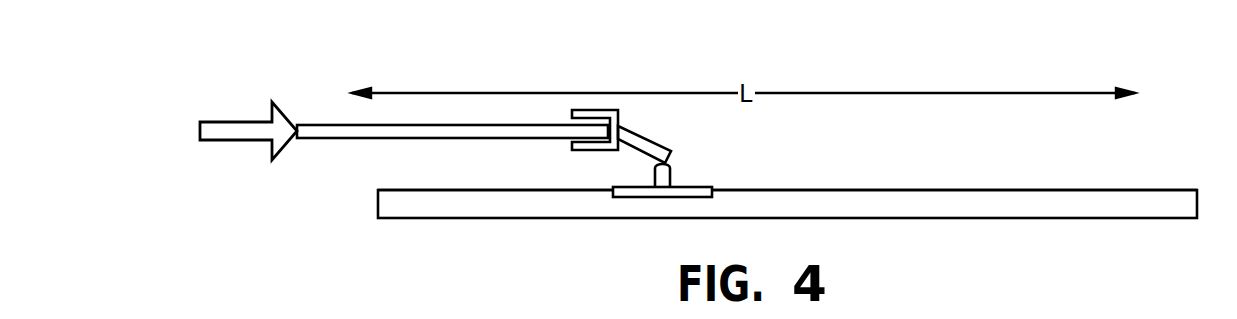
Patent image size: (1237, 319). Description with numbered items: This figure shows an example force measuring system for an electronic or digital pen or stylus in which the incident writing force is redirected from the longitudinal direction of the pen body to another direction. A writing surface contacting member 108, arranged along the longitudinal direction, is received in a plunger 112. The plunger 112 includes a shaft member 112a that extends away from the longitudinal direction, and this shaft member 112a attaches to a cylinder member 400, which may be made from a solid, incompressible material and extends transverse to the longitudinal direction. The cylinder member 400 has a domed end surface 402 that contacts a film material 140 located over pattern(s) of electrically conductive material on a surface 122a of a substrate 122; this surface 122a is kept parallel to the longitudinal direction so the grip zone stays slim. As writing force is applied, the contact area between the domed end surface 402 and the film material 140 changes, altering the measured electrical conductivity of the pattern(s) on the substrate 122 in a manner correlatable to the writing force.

The writing surface contacting member 108 is at (345, 130).
The plunger 112 is at (636, 114).
The shaft member 112a is at (642, 145).
The cylinder member 400 is at (670, 173).
The domed end surface 402 is at (660, 186).
The substrate 122 is at (423, 212).
The substrate surface 122a is at (422, 191).
The film material 140 is at (713, 188).